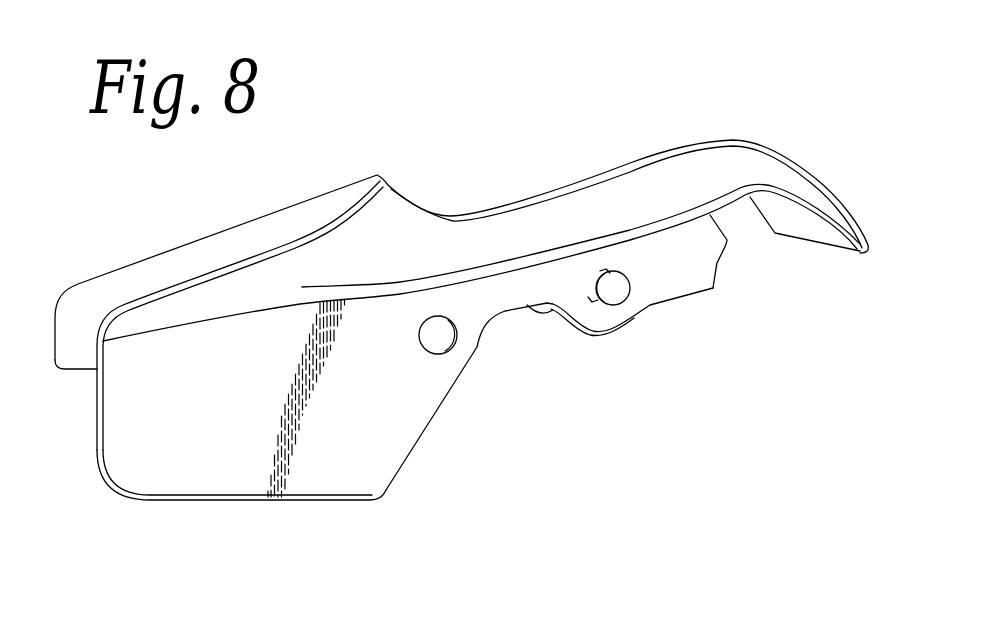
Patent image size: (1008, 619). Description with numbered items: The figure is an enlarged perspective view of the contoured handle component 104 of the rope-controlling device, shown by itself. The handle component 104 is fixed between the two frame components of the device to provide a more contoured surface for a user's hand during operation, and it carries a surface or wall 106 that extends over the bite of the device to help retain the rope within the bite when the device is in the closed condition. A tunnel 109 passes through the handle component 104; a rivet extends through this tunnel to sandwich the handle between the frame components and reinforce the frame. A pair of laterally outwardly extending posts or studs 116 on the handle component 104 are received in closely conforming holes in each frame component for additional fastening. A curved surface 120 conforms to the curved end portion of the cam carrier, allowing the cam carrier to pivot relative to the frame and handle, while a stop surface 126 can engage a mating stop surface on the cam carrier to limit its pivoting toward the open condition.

The handle component 104 is at (697, 82).
The surface/wall 106 is at (205, 475).
The tunnel 109 is at (445, 345).
The posts or studs 116 is at (617, 296).
The curved surface 120 is at (813, 230).
The stop surface 126 is at (730, 243).